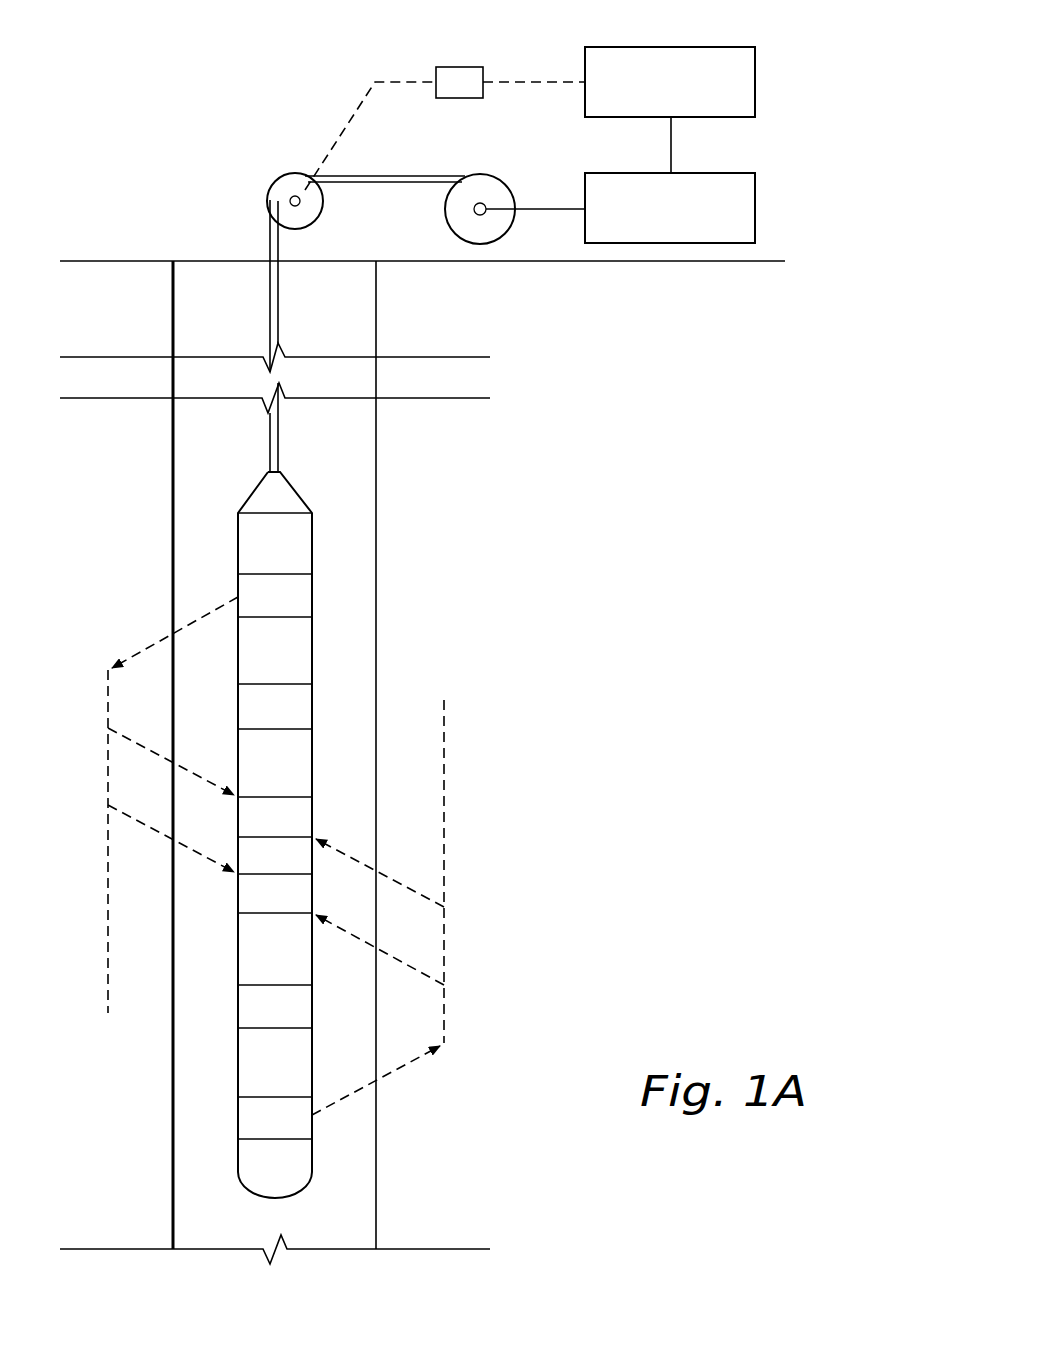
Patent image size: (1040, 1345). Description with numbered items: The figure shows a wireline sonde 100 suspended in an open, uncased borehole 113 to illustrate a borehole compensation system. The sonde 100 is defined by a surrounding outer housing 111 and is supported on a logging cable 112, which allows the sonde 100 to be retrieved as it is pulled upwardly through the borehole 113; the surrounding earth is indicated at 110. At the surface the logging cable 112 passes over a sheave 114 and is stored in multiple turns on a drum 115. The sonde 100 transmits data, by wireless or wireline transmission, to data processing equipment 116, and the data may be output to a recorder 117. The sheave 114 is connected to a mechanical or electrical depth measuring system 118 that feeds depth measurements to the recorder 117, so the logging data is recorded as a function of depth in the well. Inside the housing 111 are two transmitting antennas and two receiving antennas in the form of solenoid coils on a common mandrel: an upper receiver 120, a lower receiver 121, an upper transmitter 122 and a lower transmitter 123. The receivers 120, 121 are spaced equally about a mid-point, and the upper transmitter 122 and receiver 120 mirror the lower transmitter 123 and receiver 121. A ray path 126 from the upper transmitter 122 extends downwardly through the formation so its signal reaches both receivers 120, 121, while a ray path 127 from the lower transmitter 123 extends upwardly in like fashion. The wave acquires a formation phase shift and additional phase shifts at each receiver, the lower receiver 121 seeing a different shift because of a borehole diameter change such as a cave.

The sonde 100 is at (564, 656).
The earth surface / formation 110 is at (340, 270).
The outer housing 111 is at (238, 548).
The logging cable 112 is at (268, 239).
The borehole 113 is at (375, 320).
The sheave 114 is at (280, 178).
The drum 115 is at (542, 205).
The data processing equipment 116 is at (755, 207).
The recorder 117 is at (755, 82).
The depth measuring system 118 is at (459, 64).
The upper receiver 120 is at (312, 805).
The lower receiver 121 is at (238, 905).
The upper transmitter 122 is at (312, 598).
The lower transmitter 123 is at (238, 1118).
The ray path 126 is at (107, 768).
The ray path 127 is at (444, 930).